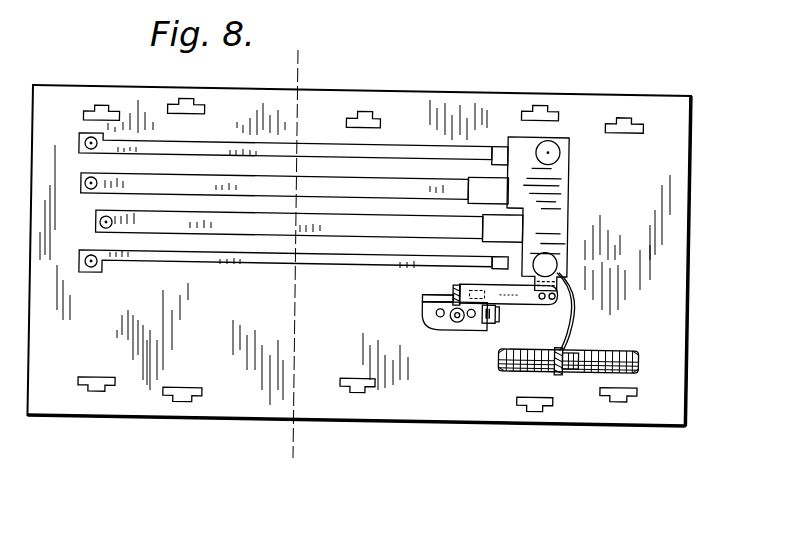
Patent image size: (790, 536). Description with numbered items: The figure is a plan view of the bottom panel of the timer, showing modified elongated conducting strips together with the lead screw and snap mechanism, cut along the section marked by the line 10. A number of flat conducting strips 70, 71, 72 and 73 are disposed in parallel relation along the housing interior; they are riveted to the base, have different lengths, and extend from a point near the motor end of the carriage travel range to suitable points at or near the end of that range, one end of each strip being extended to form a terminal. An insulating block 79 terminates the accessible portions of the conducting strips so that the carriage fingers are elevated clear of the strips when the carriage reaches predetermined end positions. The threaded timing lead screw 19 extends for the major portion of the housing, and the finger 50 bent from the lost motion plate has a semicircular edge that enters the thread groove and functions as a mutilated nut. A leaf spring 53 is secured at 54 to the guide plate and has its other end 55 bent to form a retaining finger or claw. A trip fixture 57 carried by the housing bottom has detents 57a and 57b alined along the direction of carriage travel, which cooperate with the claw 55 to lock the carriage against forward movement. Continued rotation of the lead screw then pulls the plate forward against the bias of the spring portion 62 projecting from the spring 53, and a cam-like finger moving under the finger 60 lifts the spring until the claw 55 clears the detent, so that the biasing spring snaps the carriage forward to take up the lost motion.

The section line 10- 10 is at (313, 57).
The timing lead screw 19 is at (503, 360).
The finger 50 is at (553, 370).
The leaf spring 53 is at (467, 320).
The secured end 54 is at (554, 295).
The retaining finger (spring claw) 55 is at (430, 311).
The trip fixture 57 is at (423, 301).
The detent 57a is at (428, 296).
The detent 57b is at (494, 318).
The finger 60 is at (493, 324).
The spring portion 62 is at (572, 320).
The conducting strip 70 is at (373, 267).
The conducting strip 71 is at (308, 225).
The conducting strip 72 is at (295, 187).
The conducting strip 73 is at (398, 152).
The insulating block 79 is at (567, 196).